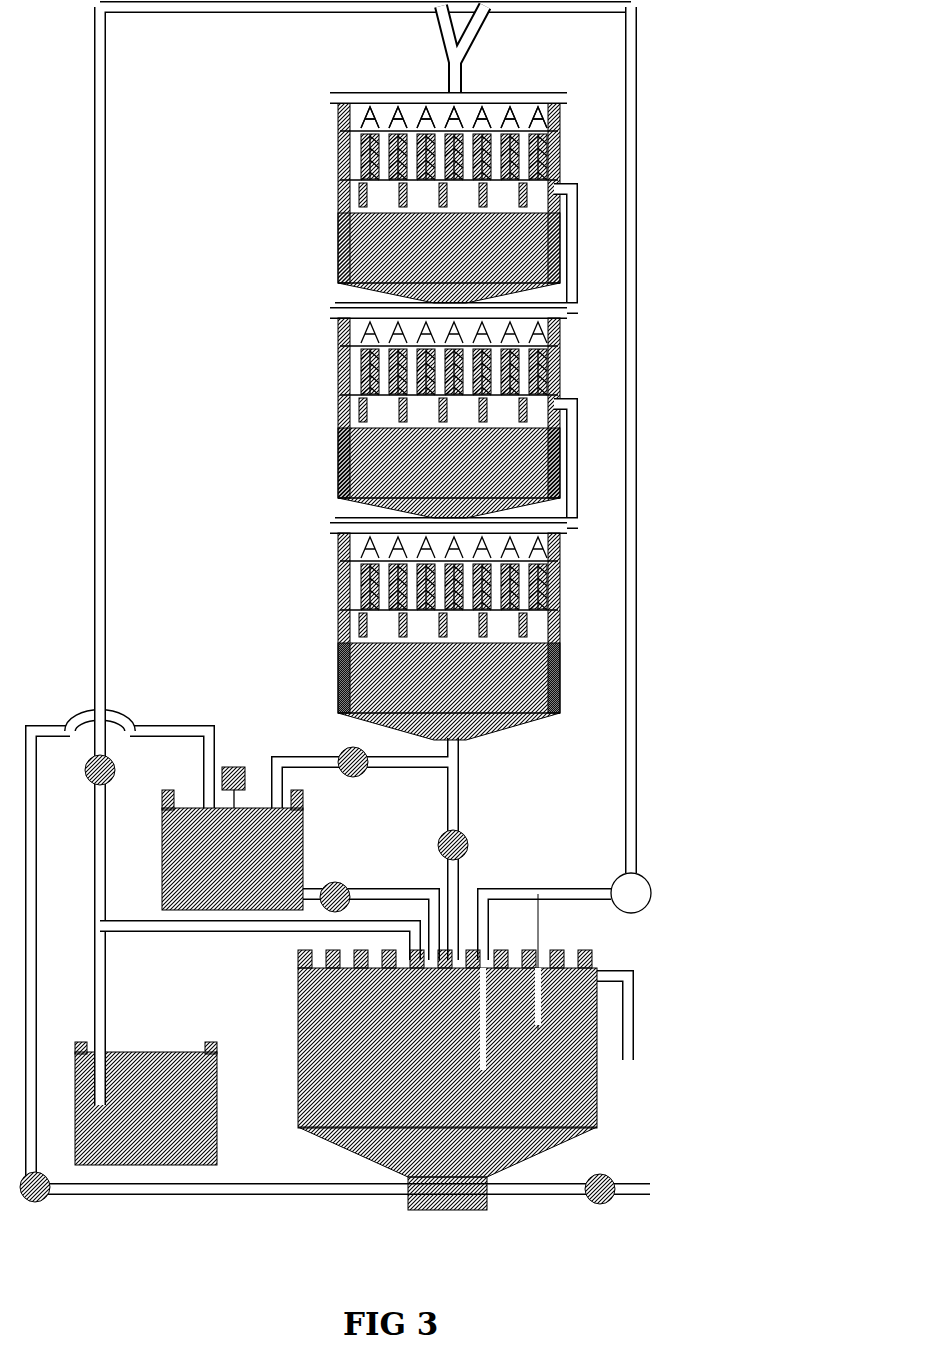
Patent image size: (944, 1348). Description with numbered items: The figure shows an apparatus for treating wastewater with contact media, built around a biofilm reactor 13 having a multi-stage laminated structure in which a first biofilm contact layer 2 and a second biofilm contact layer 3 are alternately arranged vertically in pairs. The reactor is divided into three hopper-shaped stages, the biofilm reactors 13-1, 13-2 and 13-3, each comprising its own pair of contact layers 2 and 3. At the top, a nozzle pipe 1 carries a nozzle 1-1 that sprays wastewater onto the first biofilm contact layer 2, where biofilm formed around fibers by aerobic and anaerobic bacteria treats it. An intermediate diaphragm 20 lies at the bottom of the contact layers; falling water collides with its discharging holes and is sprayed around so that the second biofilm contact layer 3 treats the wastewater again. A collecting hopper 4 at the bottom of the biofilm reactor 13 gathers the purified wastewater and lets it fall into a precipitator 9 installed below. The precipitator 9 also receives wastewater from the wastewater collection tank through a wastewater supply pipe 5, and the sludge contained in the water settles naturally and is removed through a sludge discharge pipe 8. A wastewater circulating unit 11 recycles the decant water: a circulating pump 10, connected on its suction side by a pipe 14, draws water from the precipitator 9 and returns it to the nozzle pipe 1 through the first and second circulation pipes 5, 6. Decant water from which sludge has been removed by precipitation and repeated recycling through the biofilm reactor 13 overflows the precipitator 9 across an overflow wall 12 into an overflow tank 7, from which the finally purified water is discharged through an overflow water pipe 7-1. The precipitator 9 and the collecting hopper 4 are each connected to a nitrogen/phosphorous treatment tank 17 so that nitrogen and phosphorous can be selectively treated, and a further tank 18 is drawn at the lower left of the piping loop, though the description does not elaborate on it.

The nozzle pipe 1 is at (472, 92).
The nozzle 1-1 is at (545, 118).
The first biofilm contact layer 2 is at (560, 660).
The second biofilm contact layer 3 is at (337, 163).
The collecting hopper 4 is at (337, 712).
The wastewater supply pipe 5 is at (103, 926).
The second circulation pipe 6 is at (642, 664).
The overflow tank 7 is at (298, 985).
The overflow water pipe 7-1 is at (640, 1025).
The sludge discharge pipe 8 is at (560, 1183).
The precipitator 9 is at (345, 1140).
The circulating pump 10 is at (651, 891).
The wastewater circulating unit 11 is at (712, 750).
The overflow wall 12 is at (538, 896).
The biofilm reactor 13 is at (500, 418).
The biofilm reactor 13-1 is at (733, 315).
The biofilm reactor 13-2 is at (727, 510).
The biofilm reactor 13-3 is at (745, 526).
The pump suction pipe 14 is at (575, 888).
The nitrogen/phosphorous treatment tank 17 is at (303, 840).
The storage tank 18 is at (217, 1100).
The intermediate diaphragm 20 is at (558, 358).